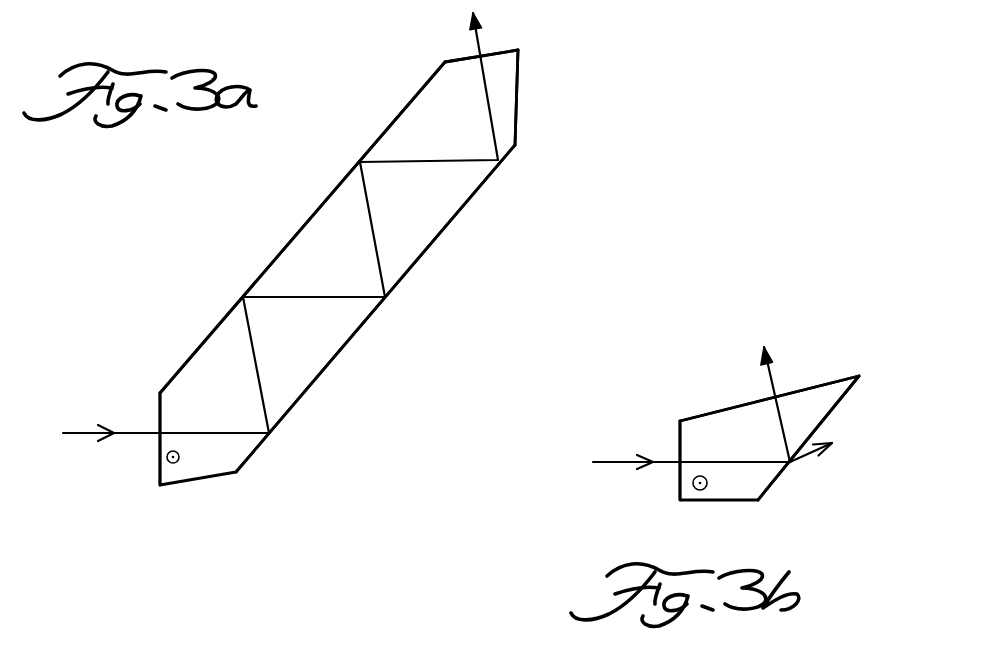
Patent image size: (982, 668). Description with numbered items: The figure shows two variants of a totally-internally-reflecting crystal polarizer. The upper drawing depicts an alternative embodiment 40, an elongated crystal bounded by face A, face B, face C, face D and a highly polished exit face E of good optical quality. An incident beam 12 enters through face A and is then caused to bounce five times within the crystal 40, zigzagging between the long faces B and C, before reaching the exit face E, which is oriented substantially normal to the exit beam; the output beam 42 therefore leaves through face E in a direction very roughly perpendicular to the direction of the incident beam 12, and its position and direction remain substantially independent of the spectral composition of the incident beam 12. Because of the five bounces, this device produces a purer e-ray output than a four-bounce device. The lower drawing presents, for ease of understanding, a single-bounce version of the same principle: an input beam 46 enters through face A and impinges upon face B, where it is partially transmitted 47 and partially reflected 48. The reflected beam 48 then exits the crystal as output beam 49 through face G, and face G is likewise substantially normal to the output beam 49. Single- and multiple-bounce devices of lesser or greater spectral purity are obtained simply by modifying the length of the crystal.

In FIG. 3A, the alternative embodiment 40 is at (420, 218).
In FIG. 3A, the incident beam 12 is at (122, 436).
In FIG. 3A, the output beam 42 is at (477, 46).
In FIG. 3B, the input beam 46 is at (744, 441).
In FIG. 3B, the partially transmitted beam 47 is at (808, 454).
In FIG. 3B, the partially reflected beam 48 is at (776, 419).
In FIG. 3B, the output beam 49 is at (768, 378).
In FIG. 3A, the face A is at (160, 408).
In FIG. 3B, the face A is at (680, 430).
In FIG. 3A, the face B is at (333, 358).
In FIG. 3B, the face B is at (825, 423).
In FIG. 3A, the face C is at (275, 258).
In FIG. 3A, the face D is at (519, 106).
In FIG. 3A, the exit face E is at (500, 50).
In FIG. 3B, the face G is at (822, 382).